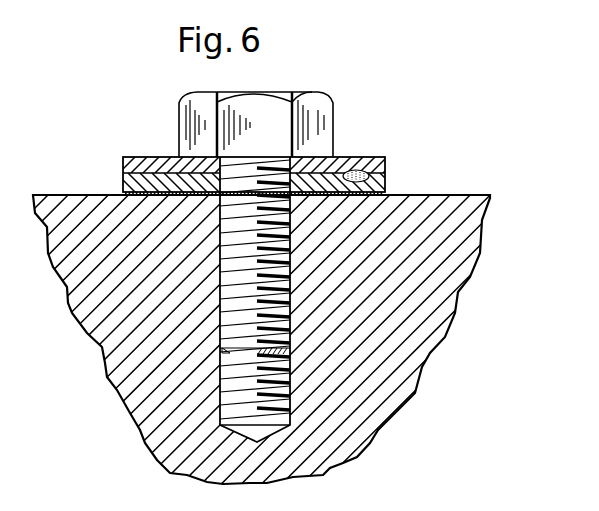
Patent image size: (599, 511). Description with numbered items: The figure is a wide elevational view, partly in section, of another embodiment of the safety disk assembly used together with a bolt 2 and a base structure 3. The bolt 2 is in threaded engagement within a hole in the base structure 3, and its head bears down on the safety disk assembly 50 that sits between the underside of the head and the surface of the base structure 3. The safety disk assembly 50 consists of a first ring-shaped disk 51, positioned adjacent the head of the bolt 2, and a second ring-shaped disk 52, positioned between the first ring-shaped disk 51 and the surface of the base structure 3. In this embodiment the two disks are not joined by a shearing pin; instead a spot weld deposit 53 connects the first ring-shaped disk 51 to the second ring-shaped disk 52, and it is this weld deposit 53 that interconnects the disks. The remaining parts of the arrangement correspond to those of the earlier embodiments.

The bolt 2 is at (329, 102).
The base structure 3 is at (451, 261).
The safety disk assembly 50 is at (119, 171).
The first ring-shaped disk 51 is at (158, 156).
The second ring-shaped disk 52 is at (124, 184).
The spot weld deposit 53 is at (354, 168).